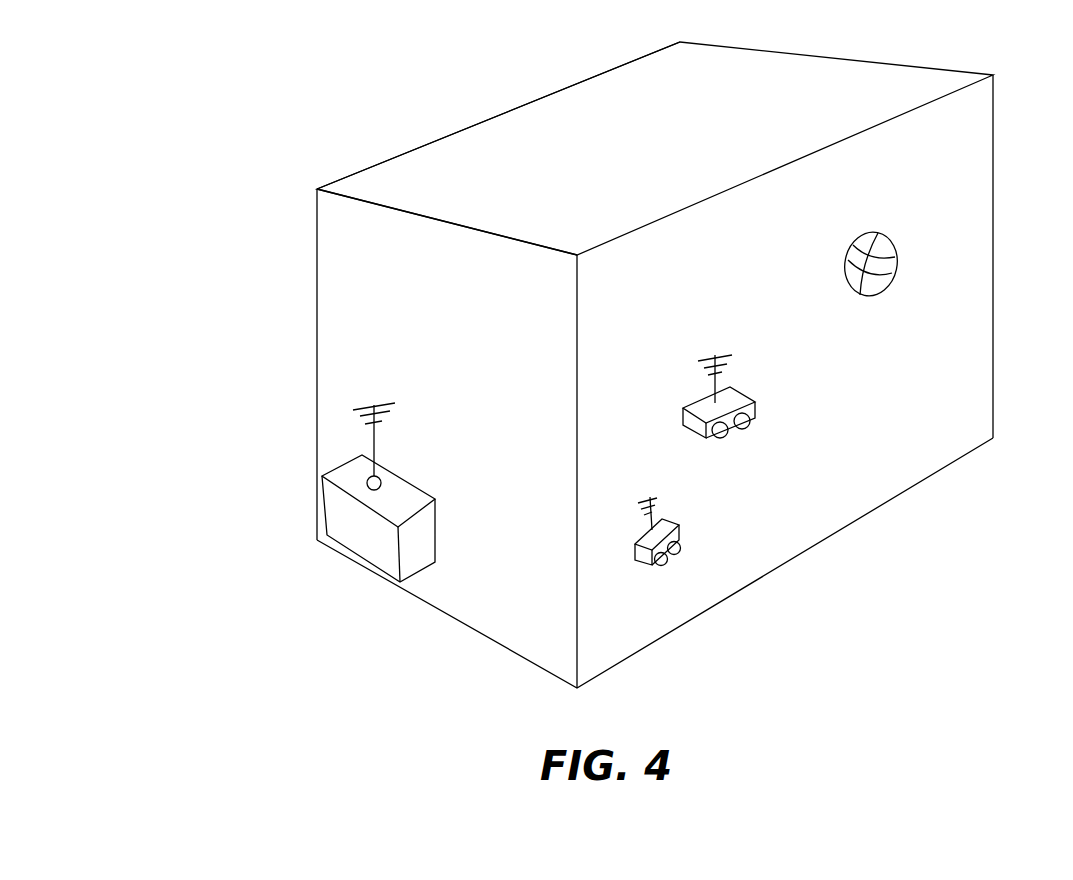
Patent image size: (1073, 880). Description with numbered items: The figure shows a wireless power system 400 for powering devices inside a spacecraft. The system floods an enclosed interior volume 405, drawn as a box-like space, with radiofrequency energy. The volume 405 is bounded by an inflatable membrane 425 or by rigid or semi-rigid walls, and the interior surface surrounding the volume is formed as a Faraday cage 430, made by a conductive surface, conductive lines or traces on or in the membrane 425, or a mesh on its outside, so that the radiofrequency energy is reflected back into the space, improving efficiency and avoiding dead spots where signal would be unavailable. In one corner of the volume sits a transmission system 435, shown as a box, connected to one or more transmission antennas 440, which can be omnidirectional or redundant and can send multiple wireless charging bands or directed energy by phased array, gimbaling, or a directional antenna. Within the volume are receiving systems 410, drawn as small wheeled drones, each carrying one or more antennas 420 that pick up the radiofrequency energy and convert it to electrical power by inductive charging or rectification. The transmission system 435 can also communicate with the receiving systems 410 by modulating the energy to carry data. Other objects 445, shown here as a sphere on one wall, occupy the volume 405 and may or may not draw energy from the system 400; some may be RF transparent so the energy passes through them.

The wireless power system 400 is at (198, 137).
The enclosed interior volume 405 is at (648, 305).
The receiving systems 410 is at (682, 553).
The antennas 420 is at (636, 540).
The inflatable membrane 425 is at (476, 125).
The Faraday cage 430 is at (420, 188).
The transmission system 435 is at (362, 523).
The transmission antennas 440 is at (360, 402).
The other objects 445 is at (896, 270).